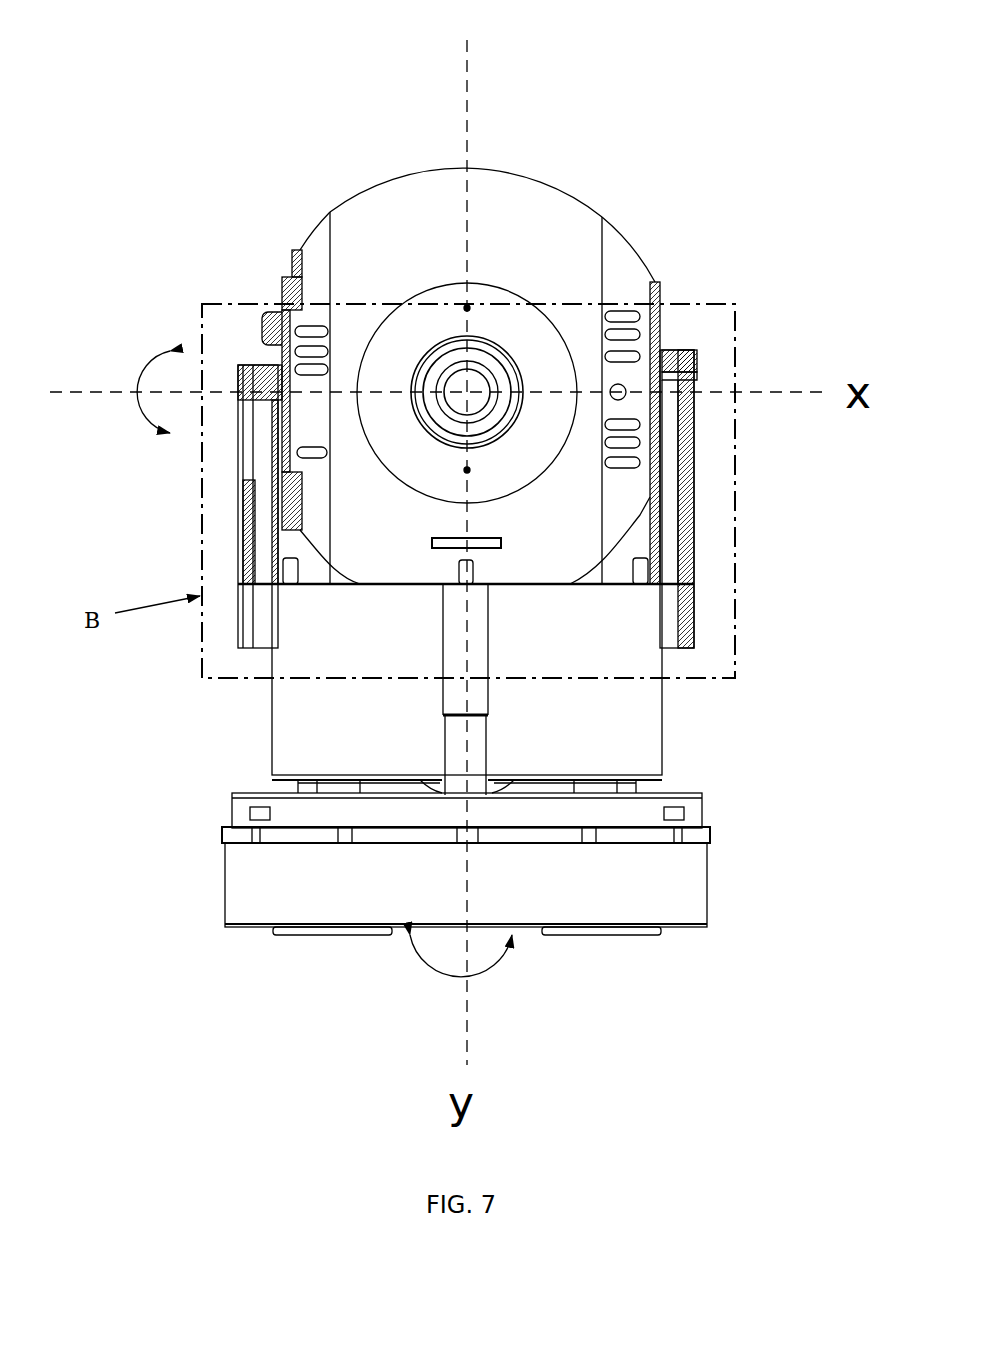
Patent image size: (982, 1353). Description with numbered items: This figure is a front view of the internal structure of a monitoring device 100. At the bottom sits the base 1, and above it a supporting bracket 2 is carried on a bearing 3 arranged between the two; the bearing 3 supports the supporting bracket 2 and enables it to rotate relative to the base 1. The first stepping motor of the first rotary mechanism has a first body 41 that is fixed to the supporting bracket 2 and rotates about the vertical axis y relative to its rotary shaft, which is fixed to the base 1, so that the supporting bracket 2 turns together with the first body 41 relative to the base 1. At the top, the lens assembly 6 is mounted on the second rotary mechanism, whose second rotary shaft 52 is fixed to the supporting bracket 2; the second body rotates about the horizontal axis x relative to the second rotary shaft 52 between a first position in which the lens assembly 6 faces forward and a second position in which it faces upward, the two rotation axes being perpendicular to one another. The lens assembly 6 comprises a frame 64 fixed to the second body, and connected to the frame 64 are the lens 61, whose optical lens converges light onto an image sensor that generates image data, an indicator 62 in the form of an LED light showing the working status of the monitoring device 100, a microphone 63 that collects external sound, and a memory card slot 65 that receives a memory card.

The monitoring device 100 is at (497, 137).
The base 1 is at (653, 906).
The supporting bracket 2 is at (613, 670).
The bearing 3 is at (635, 817).
The first body 41 is at (465, 745).
The second rotary shaft 52 is at (697, 353).
The lens assembly 6 is at (466, 398).
The lens 61 is at (467, 308).
The indicator 62 is at (445, 412).
The microphone 63 is at (467, 470).
The frame 64 is at (467, 212).
The memory card slot 65 is at (501, 543).